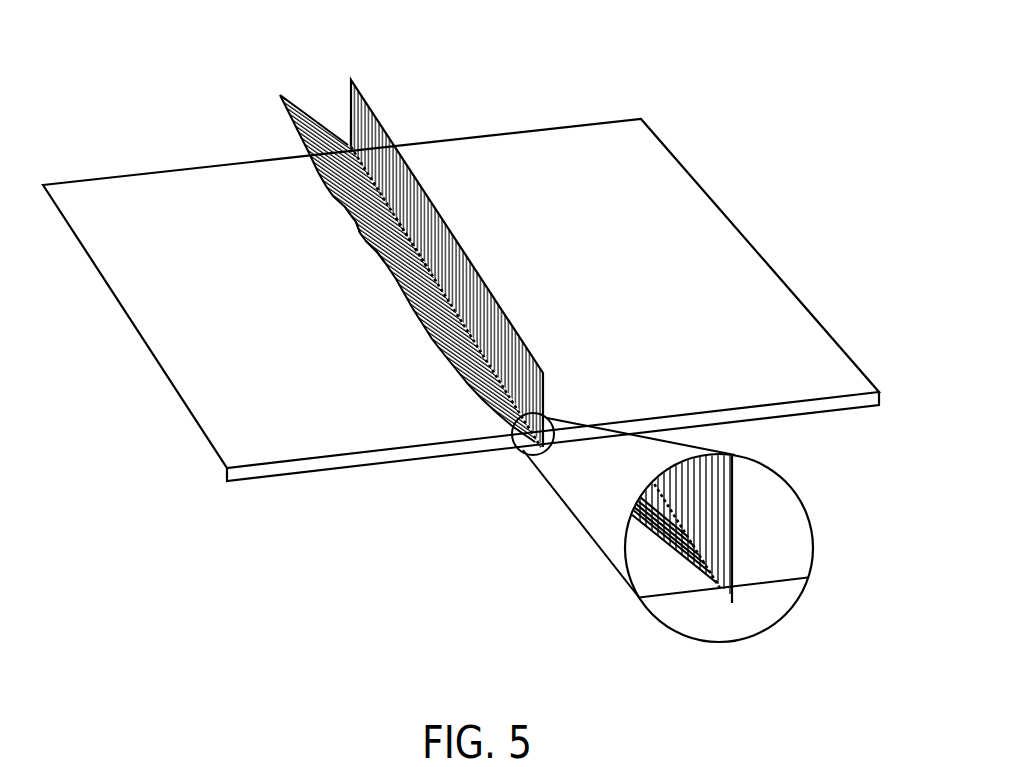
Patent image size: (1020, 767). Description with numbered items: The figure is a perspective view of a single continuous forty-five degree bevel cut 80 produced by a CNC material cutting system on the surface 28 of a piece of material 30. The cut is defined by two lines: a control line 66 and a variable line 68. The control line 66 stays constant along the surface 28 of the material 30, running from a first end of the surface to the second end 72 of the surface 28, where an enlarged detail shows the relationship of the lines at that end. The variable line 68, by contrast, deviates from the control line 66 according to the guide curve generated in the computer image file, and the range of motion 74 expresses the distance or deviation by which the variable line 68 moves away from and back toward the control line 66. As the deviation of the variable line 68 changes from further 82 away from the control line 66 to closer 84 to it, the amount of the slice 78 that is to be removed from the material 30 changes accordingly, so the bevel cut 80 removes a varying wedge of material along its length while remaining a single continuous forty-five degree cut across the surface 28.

The surface 28 is at (602, 147).
The material 30 is at (305, 466).
The control line 66 is at (362, 86).
The variable line 68 is at (300, 117).
The second end 72 is at (525, 452).
The range of motion 74 is at (357, 147).
The slice 78 is at (348, 145).
The single continuous 45 degree bevel cut 80 is at (420, 222).
The further 82 is at (352, 227).
The closer 84 is at (377, 250).